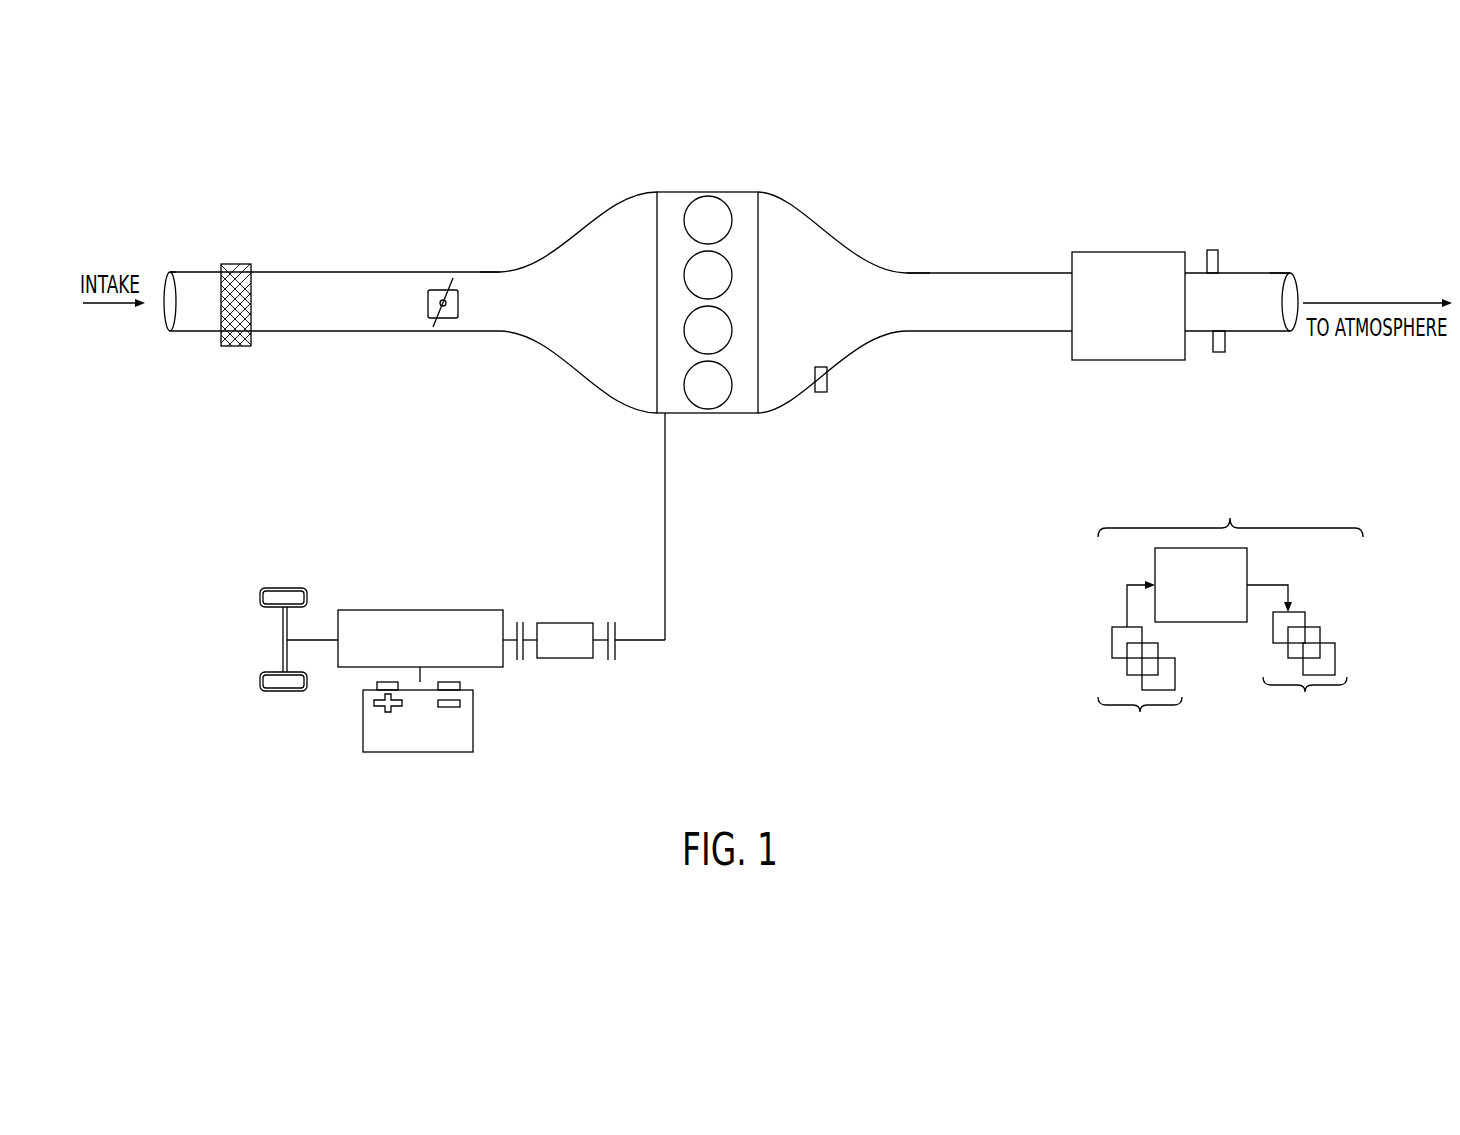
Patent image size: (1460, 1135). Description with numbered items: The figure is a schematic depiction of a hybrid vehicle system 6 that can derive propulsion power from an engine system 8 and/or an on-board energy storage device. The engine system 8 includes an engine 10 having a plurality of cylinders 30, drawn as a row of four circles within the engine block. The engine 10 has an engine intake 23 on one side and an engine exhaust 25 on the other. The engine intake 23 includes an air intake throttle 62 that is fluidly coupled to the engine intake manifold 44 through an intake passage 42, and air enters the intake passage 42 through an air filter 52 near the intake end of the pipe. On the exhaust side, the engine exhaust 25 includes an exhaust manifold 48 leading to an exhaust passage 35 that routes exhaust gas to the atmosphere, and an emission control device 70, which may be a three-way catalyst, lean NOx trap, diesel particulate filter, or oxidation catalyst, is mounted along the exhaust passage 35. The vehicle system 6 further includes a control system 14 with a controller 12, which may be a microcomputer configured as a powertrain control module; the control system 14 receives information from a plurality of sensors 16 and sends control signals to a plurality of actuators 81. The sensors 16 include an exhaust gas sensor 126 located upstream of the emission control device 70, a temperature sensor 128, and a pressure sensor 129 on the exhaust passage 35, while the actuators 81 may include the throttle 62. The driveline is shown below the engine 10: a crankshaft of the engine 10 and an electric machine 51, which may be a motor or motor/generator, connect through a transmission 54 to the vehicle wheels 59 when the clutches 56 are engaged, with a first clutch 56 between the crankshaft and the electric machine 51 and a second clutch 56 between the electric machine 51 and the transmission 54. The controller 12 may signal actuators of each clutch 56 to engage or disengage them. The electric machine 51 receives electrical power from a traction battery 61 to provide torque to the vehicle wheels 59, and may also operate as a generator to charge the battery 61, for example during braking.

The hybrid vehicle system 6 is at (175, 212).
The engine system 8 is at (1318, 230).
The engine 10 is at (759, 265).
The controller 12 is at (1209, 587).
The control system 14 is at (1230, 498).
The sensors 16 is at (1140, 700).
The engine intake 23 is at (550, 230).
The engine exhaust 25 is at (878, 225).
The cylinders 30 is at (732, 218).
The exhaust passage 35 is at (1259, 272).
The intake passage 42 is at (203, 320).
The engine intake manifold 44 is at (603, 311).
The exhaust manifold 48 is at (828, 311).
The electric machine 51 is at (565, 660).
The air filter 52 is at (236, 270).
The transmission 54 is at (349, 668).
The clutches 56 is at (523, 624).
The vehicle wheels 59 is at (283, 692).
The traction battery 61 is at (405, 753).
The air intake throttle 62 is at (459, 310).
The emission control device 70 is at (1133, 251).
The actuators 81 is at (1305, 684).
The exhaust gas sensor 126 is at (828, 372).
The temperature sensor 128 is at (1219, 353).
The pressure sensor 129 is at (1213, 249).